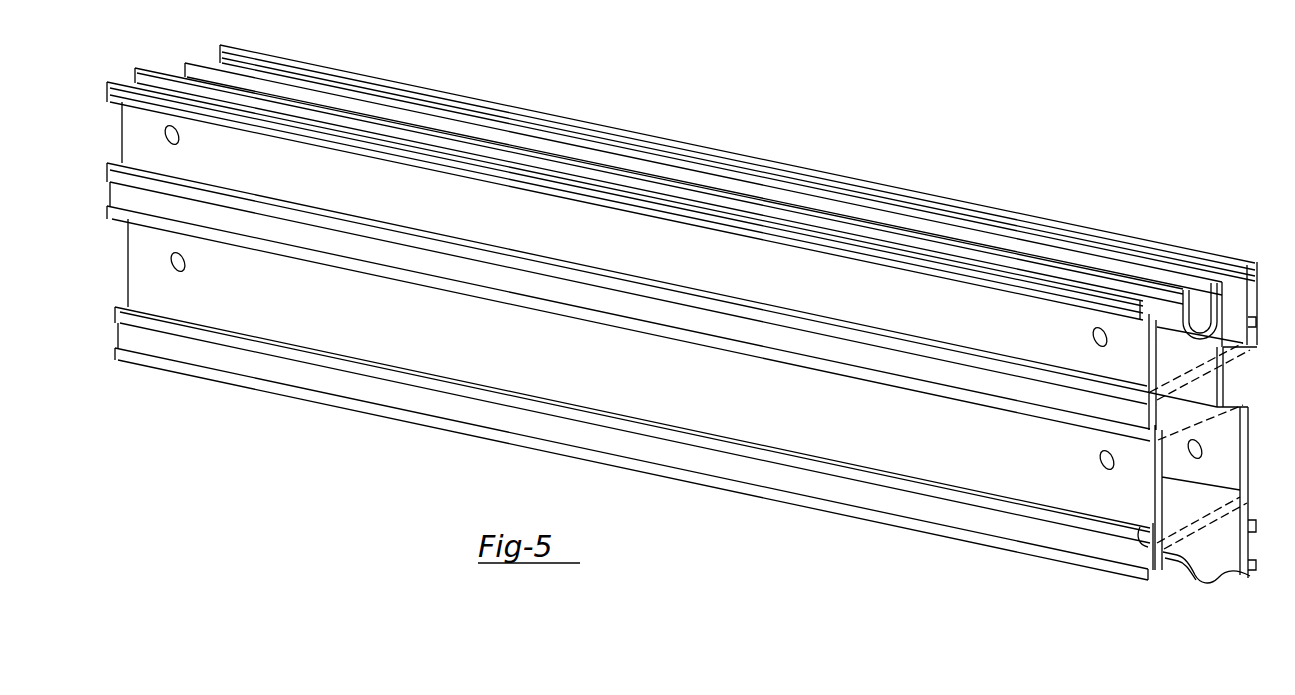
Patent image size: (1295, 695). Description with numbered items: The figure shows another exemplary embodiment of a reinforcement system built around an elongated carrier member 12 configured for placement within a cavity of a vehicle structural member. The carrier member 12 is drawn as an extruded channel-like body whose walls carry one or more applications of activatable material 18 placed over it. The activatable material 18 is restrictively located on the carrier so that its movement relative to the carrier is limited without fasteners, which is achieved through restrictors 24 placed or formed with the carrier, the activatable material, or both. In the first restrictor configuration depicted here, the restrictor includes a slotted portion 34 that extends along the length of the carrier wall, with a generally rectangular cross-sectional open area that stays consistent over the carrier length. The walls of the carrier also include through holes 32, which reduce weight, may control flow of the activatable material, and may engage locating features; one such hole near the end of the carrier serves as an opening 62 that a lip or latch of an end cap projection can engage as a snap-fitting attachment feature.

The carrier member 12 is at (773, 160).
The activatable material 18 is at (1145, 250).
The restrictors 24 is at (1260, 272).
The through holes 32 is at (1205, 455).
The opening, recess, groove, or the like 62 is at (165, 136).
The slotted portion 34 is at (1148, 566).